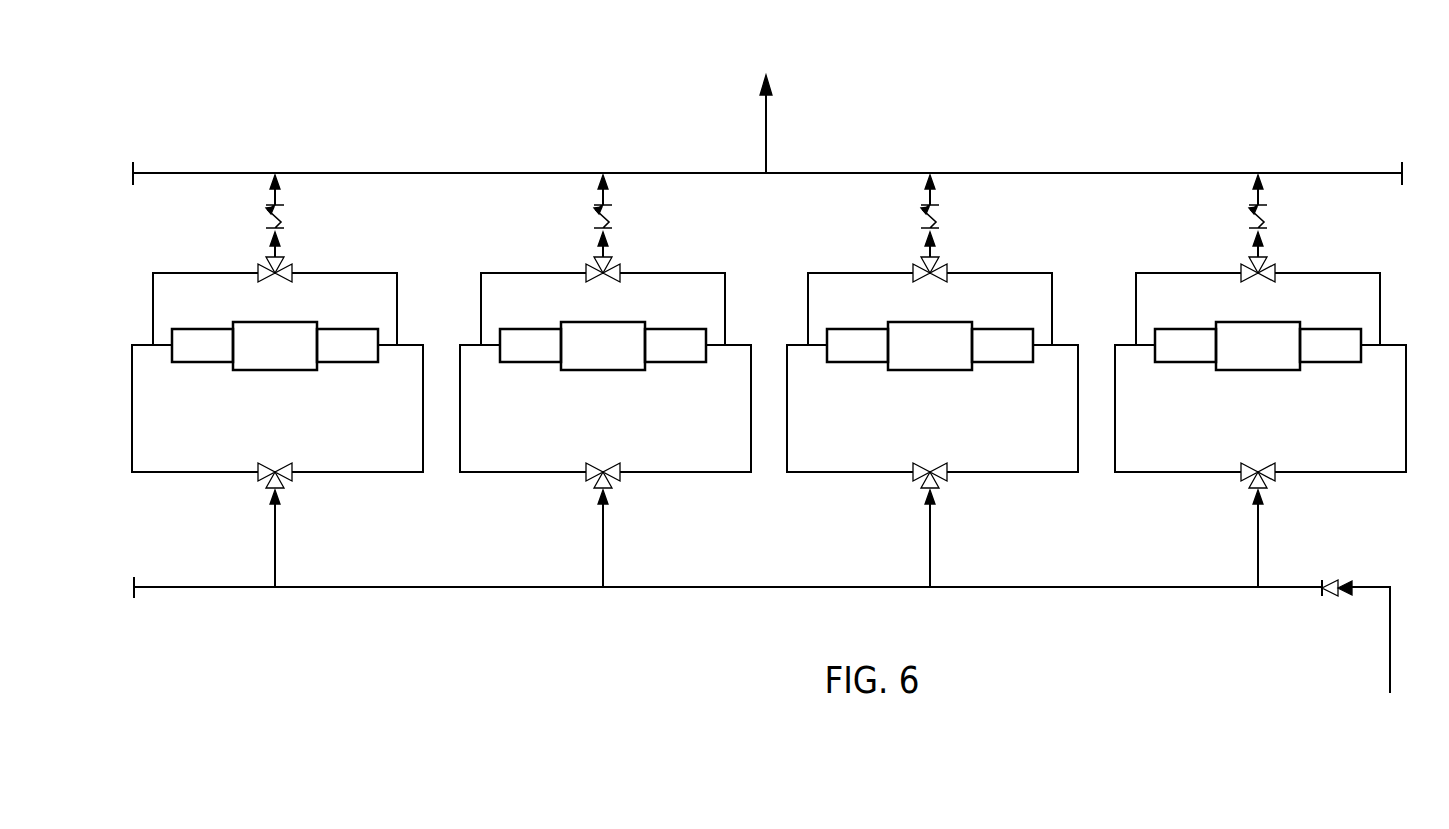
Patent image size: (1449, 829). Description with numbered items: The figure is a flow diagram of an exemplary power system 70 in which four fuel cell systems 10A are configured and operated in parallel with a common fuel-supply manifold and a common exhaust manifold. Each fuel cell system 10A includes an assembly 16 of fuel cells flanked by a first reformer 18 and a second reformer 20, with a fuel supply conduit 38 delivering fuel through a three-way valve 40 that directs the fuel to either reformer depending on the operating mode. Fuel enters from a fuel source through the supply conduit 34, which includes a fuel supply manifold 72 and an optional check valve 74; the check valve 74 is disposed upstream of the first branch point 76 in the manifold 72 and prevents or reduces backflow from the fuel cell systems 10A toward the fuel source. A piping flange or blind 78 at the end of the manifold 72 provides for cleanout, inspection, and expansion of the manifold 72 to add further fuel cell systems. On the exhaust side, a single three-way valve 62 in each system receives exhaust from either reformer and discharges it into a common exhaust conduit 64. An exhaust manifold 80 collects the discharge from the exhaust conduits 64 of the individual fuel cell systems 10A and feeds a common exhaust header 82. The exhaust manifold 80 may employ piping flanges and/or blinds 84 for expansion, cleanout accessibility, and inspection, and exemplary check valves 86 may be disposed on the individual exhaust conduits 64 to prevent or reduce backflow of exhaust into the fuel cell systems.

The fuel cell system 10A is at (402, 256).
The assembly of fuel cells 16 is at (275, 371).
The first reformer 18 is at (205, 363).
The second reformer 20 is at (337, 363).
The supply conduit 34 is at (1392, 633).
The fuel supply conduit 38 is at (278, 548).
The three-way valve 40 is at (278, 465).
The three-way valve 62 is at (769, 285).
The common exhaust conduit 64 is at (281, 200).
The power system 70 is at (1324, 95).
The fuel supply manifold 72 is at (1088, 586).
The check valve 74 is at (1333, 580).
The first branch point 76 is at (1258, 589).
The piping flange or blind 78 is at (132, 582).
The exhaust manifold 80 is at (345, 172).
The common exhaust header 82 is at (762, 118).
The piping flanges and/or blinds 84 is at (130, 168).
The check valve 86 is at (283, 216).